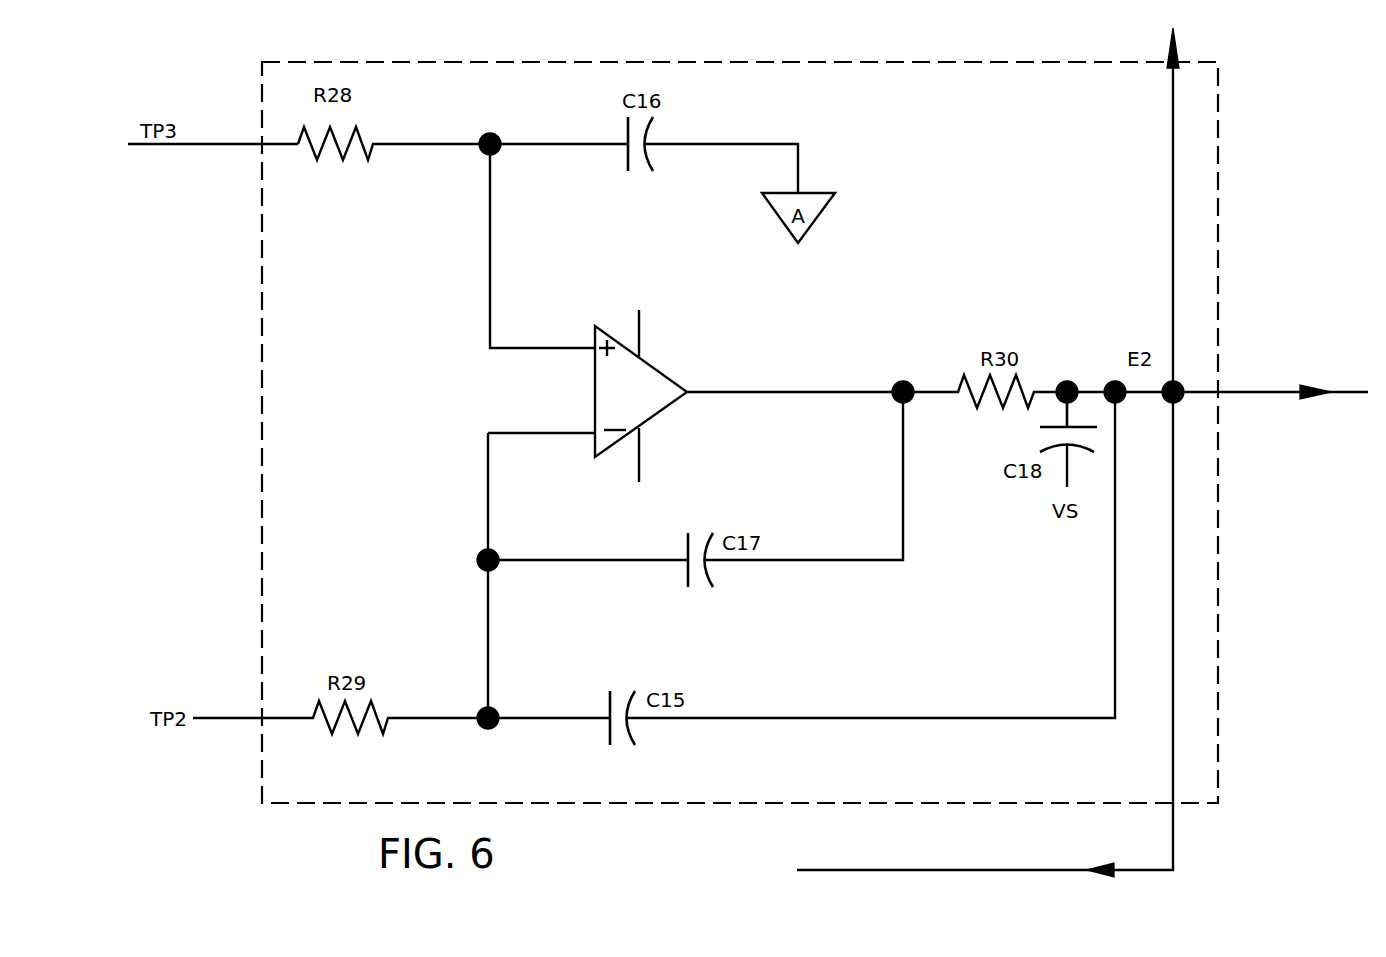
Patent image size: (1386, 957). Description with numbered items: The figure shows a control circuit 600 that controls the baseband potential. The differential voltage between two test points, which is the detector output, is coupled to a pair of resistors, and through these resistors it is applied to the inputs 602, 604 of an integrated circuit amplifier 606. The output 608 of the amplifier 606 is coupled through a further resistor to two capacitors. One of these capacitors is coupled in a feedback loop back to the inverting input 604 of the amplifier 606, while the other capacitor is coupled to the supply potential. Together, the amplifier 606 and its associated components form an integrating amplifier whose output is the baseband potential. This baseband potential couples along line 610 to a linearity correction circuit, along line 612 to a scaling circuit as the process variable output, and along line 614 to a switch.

The control circuit 600 is at (1218, 148).
The input of amplifier 602 is at (590, 346).
The inverting input of amplifier 604 is at (592, 430).
The integrated circuit amplifier 606 is at (652, 355).
The output of amplifier 608 is at (689, 390).
The line to linearity circuit 610 is at (1175, 228).
The line to scaling circuit 612 is at (1240, 394).
The line to switch S4 614 is at (1175, 510).